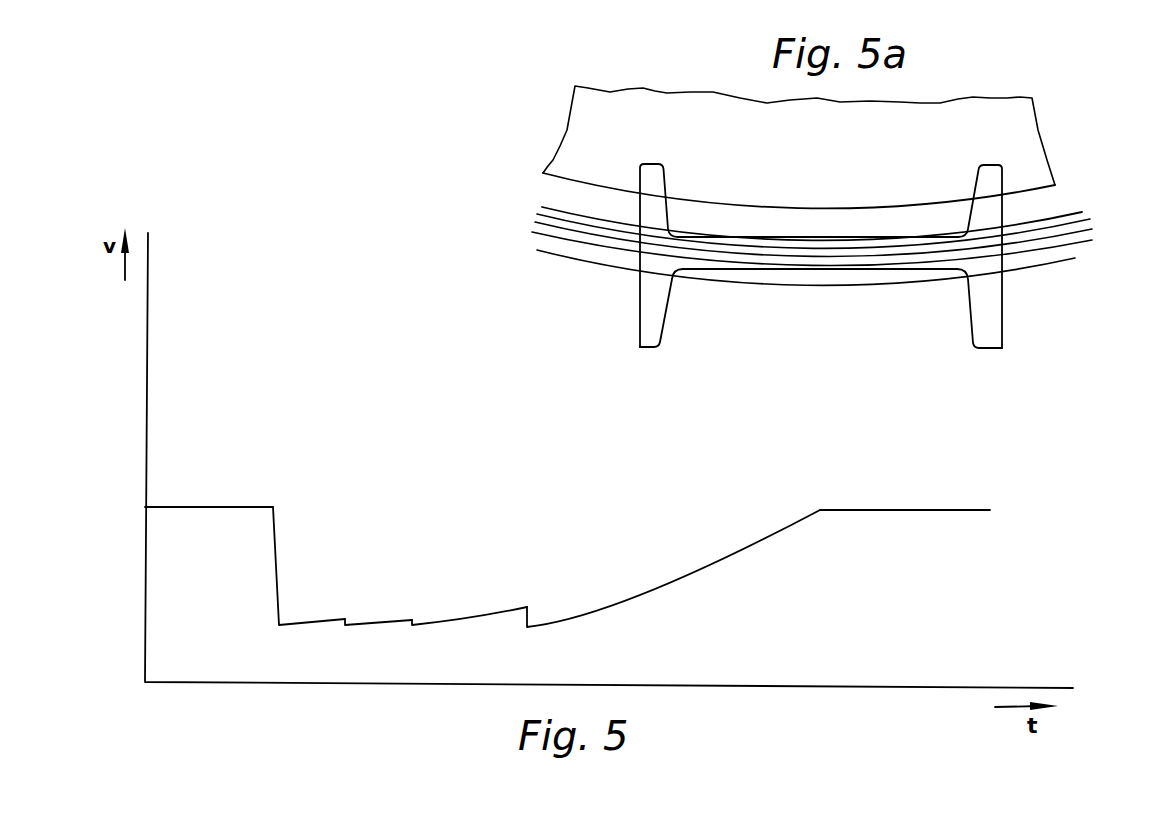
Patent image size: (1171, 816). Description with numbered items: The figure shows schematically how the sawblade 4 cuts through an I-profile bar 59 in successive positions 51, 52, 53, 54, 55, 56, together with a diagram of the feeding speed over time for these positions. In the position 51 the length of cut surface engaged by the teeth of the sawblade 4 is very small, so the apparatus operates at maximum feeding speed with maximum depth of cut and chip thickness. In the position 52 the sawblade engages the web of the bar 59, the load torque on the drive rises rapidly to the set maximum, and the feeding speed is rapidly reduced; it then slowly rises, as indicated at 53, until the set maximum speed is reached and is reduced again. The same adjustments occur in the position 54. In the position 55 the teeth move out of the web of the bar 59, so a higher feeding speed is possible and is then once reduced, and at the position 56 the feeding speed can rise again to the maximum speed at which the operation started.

In FIG. 5a, the sawblade 4 is at (574, 128).
In FIG. 5a, the position 51 is at (718, 200).
In FIG. 5, the position 51 is at (209, 497).
In FIG. 5a, the position 52 is at (1045, 215).
In FIG. 5, the position 52 is at (274, 507).
In FIG. 5a, the position 53 is at (1068, 228).
In FIG. 5, the position 53 is at (346, 618).
In FIG. 5a, the position 54 is at (1040, 240).
In FIG. 5, the position 54 is at (413, 619).
In FIG. 5a, the position 55 is at (808, 272).
In FIG. 5, the position 55 is at (528, 607).
In FIG. 5a, the position 56 is at (598, 263).
In FIG. 5, the position 56 is at (893, 498).
In FIG. 5a, the bar 59 is at (662, 313).